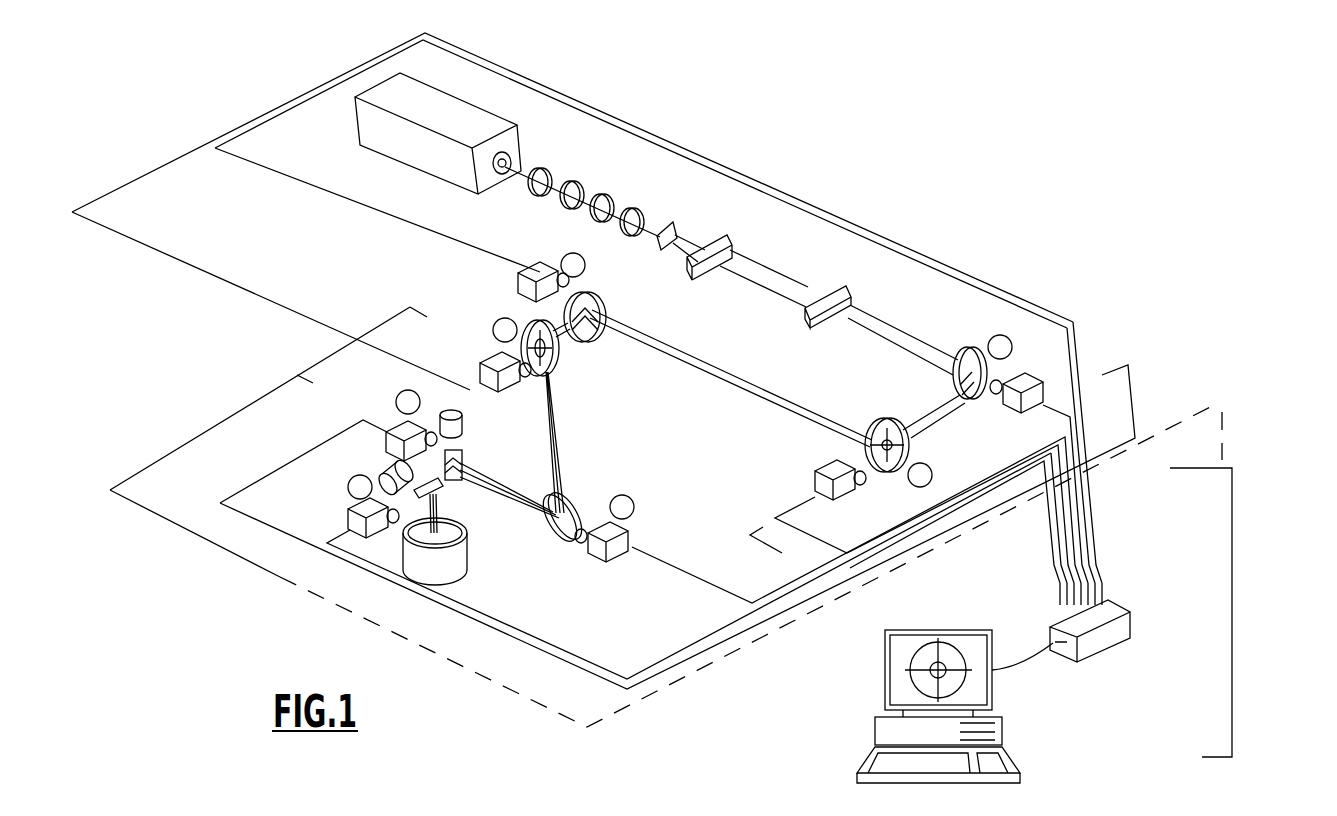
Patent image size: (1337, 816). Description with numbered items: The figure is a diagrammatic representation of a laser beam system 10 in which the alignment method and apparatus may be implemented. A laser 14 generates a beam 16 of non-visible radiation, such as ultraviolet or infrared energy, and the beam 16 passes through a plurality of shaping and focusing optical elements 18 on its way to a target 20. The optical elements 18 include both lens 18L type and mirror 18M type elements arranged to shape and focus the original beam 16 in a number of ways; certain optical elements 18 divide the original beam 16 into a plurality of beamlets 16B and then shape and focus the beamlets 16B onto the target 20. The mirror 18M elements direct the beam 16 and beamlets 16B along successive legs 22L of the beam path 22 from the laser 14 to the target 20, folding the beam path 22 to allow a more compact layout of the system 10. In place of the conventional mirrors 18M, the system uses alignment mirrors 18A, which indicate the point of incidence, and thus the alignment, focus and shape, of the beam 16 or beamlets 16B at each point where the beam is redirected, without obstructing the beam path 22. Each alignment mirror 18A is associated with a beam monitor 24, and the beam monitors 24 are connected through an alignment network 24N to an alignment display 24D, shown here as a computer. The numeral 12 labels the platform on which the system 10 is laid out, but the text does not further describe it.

The system 10 is at (968, 212).
The optical table / platform 12 is at (242, 405).
The laser 14 is at (477, 117).
The beam 16 is at (530, 173).
The beamlets 16B is at (785, 314).
The optical elements 18 is at (629, 190).
The lens 18L is at (730, 240).
The mirror 18M is at (774, 412).
The alignment mirror 18A is at (447, 500).
The target 20 is at (460, 575).
The beam path 22 is at (888, 356).
The legs 22L is at (716, 186).
The beam monitor 24 is at (548, 274).
The alignment display 24D is at (980, 630).
The alignment network 24N is at (1130, 512).